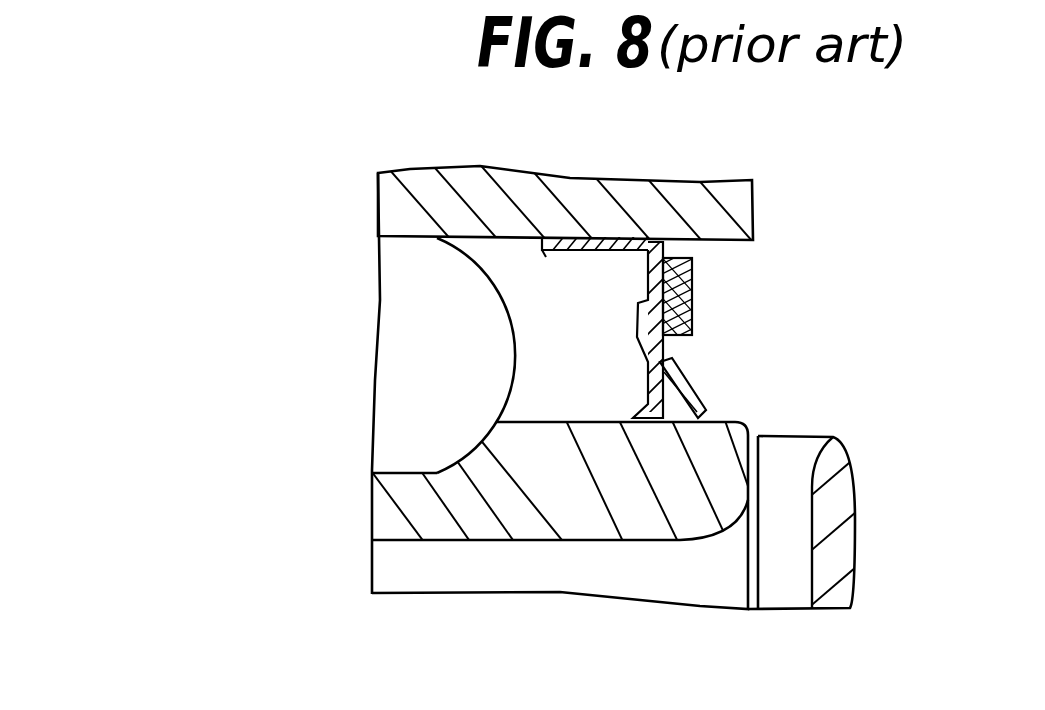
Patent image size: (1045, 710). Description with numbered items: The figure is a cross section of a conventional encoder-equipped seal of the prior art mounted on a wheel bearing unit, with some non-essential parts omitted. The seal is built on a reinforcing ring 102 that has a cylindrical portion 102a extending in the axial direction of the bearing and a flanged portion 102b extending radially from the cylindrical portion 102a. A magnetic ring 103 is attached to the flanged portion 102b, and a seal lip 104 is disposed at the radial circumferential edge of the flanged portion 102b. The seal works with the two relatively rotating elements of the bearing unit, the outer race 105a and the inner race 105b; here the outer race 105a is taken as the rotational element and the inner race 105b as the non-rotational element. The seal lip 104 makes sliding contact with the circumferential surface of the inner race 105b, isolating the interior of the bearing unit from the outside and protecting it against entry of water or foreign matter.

The reinforcing ring 102 is at (357, 328).
The cylindrical portion 102a is at (420, 295).
The flanged portion 102b is at (430, 328).
The magnetic ring 103 is at (693, 293).
The seal lip 104 is at (677, 356).
The outer race 105a is at (400, 218).
The inner race 105b is at (390, 562).